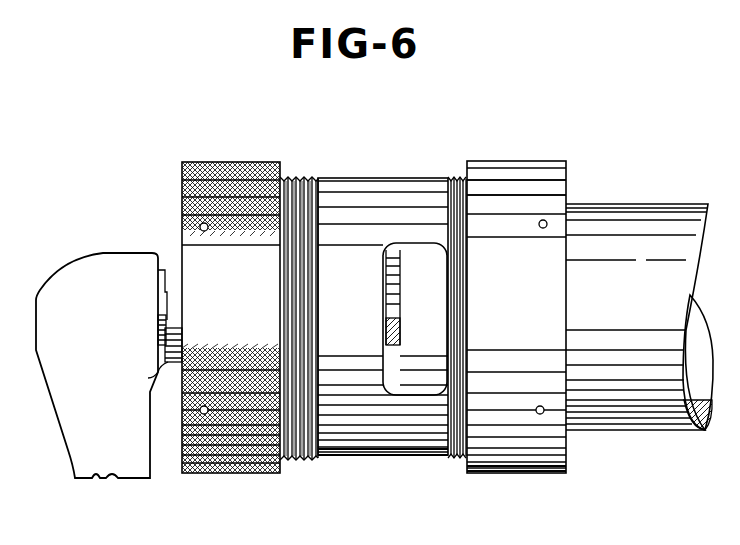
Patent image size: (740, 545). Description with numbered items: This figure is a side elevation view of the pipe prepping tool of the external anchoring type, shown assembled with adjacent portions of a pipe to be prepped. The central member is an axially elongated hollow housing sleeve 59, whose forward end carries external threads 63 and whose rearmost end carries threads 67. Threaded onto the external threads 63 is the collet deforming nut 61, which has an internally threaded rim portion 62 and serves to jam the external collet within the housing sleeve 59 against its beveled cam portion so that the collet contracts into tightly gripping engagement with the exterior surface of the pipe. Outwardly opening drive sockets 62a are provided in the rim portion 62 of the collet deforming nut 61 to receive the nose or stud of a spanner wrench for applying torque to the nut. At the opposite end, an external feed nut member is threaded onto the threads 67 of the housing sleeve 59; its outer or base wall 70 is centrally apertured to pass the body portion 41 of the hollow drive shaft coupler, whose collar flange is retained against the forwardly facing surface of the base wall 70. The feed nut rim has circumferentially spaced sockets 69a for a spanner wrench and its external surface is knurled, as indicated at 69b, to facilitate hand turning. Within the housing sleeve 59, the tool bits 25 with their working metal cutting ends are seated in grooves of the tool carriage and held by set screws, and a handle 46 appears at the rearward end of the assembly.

The handle 46 is at (108, 255).
The main body portion 41 is at (168, 362).
The base wall 70 is at (236, 162).
The sockets 69a is at (205, 232).
The knurled surface 69b is at (245, 475).
The threads 67 is at (300, 178).
The housing sleeve 59 is at (396, 178).
The tool bits 25 is at (402, 333).
The external threads 63 is at (452, 177).
The collet deforming nut 61 is at (548, 157).
The internally threaded rim portion 62 is at (552, 195).
The drive sockets 62a is at (537, 228).